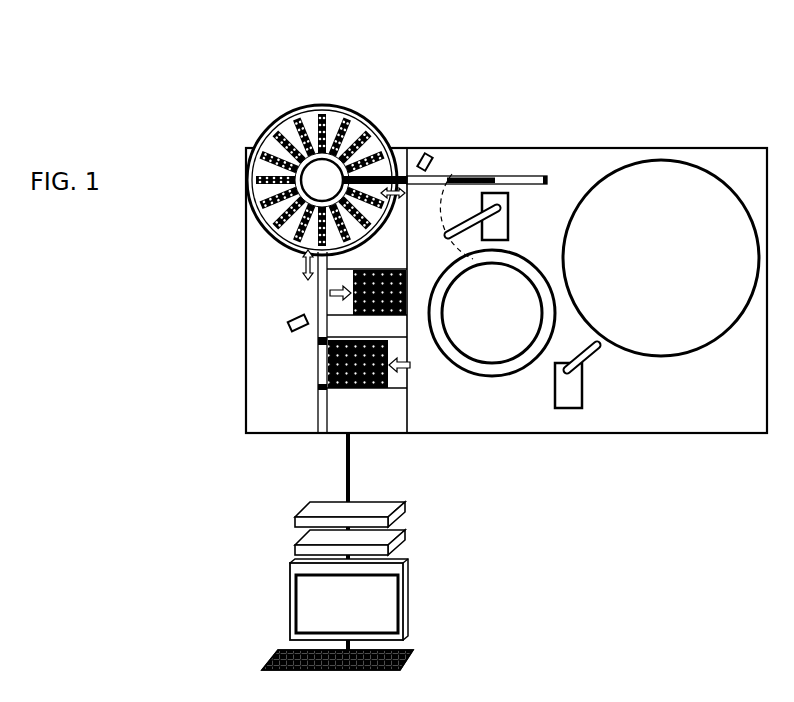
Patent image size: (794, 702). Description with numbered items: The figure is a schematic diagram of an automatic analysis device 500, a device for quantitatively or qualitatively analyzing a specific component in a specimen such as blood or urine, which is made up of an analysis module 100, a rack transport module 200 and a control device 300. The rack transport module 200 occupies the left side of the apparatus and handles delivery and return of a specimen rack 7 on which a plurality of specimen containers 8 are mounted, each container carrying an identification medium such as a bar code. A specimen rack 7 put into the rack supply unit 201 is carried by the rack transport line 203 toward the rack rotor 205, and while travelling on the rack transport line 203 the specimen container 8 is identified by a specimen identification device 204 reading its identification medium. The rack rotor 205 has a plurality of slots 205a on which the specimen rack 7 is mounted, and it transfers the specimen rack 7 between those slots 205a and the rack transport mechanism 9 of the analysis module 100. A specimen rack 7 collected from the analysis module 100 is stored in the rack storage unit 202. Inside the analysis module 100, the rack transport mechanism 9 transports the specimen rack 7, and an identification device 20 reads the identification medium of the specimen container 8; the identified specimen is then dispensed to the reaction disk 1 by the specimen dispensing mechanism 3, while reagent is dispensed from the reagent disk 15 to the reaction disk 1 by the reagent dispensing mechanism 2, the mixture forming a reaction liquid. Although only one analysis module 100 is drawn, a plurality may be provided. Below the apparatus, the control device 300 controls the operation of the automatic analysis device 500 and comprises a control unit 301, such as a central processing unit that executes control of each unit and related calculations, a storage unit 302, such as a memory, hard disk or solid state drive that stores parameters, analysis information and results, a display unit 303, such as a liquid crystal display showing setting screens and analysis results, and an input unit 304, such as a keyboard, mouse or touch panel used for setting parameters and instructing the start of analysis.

The automatic analysis device 500 is at (493, 41).
The analysis module 100 is at (705, 148).
The rack transport module 200 is at (278, 106).
The rack rotor 205 is at (330, 114).
The slots 205a is at (397, 148).
The rack transport line 203 is at (320, 297).
The specimen identification device 204 is at (287, 324).
The rack storage unit 202 is at (408, 316).
The rack supply unit 201 is at (402, 375).
The specimen rack 7 is at (371, 390).
The specimen container 8 is at (483, 176).
The identification device 20 is at (427, 154).
The specimen dispensing mechanism 3 is at (496, 196).
The rack transport mechanism 9 is at (548, 176).
The reaction disk 1 is at (494, 367).
The reagent dispensing mechanism 2 is at (566, 386).
The reagent disk 15 is at (657, 330).
The control device 300 is at (212, 495).
The control unit 301 is at (300, 505).
The storage unit 302 is at (300, 535).
The display unit 303 is at (303, 603).
The input unit 304 is at (276, 654).